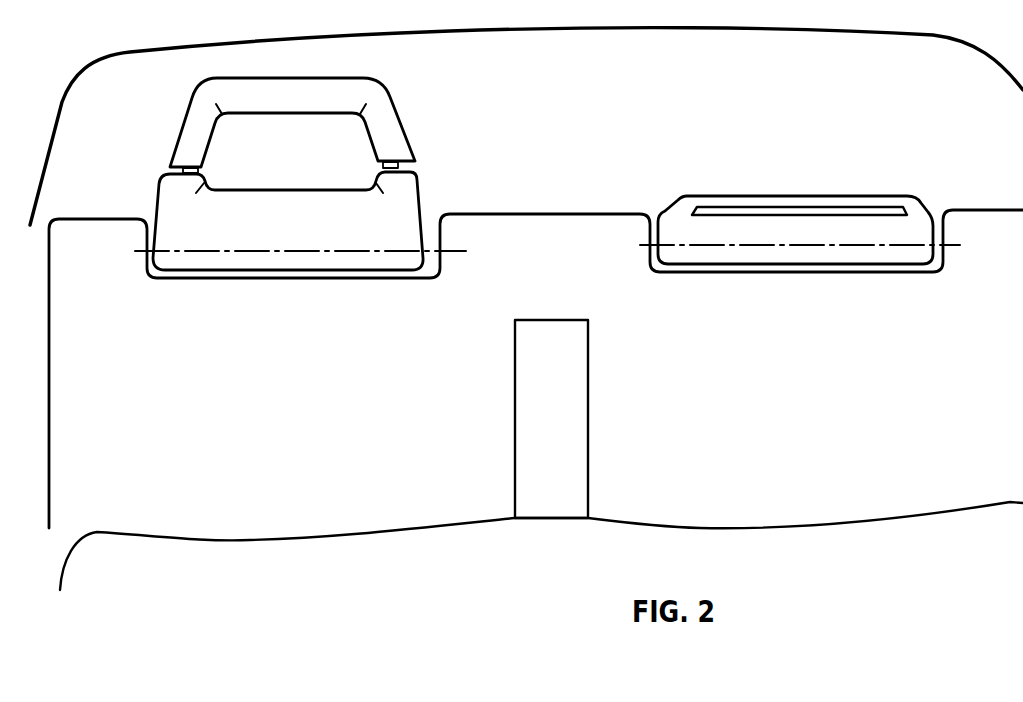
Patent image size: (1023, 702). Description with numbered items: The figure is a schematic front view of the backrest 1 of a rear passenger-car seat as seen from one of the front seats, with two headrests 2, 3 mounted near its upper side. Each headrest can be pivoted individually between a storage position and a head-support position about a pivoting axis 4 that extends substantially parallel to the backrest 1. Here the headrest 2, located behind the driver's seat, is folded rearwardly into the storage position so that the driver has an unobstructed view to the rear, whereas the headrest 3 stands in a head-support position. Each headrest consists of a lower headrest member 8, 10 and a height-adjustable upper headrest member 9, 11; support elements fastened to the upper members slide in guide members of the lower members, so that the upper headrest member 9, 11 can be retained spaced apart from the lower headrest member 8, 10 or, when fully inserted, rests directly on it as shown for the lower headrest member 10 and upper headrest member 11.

The backrest 1 is at (532, 235).
The headrest 2 is at (700, 233).
The headrest 3 is at (393, 138).
The pivoting axis 4 is at (442, 249).
The lower headrest member 8 is at (790, 230).
The upper headrest member 9 is at (882, 197).
The lower headrest member 10 is at (323, 237).
The upper headrest member 11 is at (193, 147).